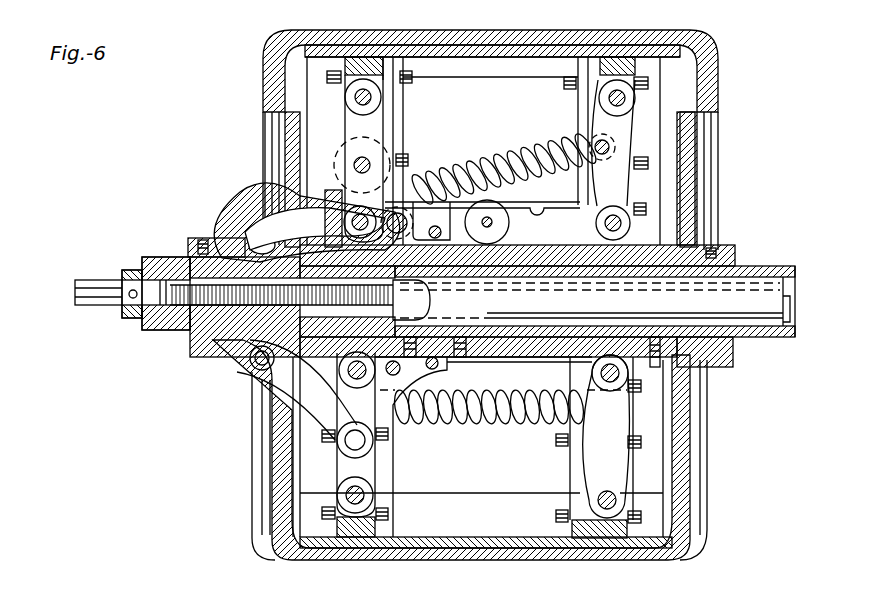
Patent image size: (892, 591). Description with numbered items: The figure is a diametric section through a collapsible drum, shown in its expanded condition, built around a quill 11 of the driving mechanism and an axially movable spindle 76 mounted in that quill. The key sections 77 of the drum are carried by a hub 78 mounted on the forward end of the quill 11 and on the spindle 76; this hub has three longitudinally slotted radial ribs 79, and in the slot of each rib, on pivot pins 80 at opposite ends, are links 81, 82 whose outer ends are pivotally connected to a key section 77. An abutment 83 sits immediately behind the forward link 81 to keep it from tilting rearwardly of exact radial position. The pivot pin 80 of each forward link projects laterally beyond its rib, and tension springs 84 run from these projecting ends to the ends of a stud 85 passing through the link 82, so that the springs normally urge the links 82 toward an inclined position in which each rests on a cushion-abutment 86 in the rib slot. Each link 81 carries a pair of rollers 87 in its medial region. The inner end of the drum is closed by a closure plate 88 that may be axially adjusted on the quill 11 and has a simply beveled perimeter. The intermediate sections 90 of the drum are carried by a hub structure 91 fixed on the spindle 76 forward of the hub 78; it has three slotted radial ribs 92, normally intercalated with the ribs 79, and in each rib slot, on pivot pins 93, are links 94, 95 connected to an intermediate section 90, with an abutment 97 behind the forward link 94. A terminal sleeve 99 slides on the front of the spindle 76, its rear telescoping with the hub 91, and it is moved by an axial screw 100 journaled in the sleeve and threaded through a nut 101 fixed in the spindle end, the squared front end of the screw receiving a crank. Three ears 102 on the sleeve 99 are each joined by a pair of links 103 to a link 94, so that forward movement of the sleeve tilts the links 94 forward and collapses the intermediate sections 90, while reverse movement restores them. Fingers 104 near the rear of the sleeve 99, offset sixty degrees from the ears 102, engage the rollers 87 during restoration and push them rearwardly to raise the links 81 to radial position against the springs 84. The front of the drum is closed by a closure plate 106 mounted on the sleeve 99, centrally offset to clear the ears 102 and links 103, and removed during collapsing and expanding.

The quill 11 is at (758, 266).
The spindle 76 is at (760, 308).
The key section 77 is at (500, 44).
The hub 78 is at (544, 343).
The radial rib 79 is at (640, 210).
The pivot pin 80 is at (350, 220).
The forward link 81 is at (350, 118).
The link 82 is at (623, 128).
The abutment 83 is at (400, 182).
The tension spring 84 is at (491, 175).
The stud 85 is at (595, 144).
The cushion-abutment 86 is at (493, 226).
The roller 87 is at (345, 160).
The closure plate 88 is at (683, 430).
The intermediate section 90 is at (336, 548).
The hub structure 91 is at (476, 344).
The radial rib 92 is at (499, 416).
The pivot pin 93 is at (352, 374).
The forward link 94 is at (345, 461).
The link 95 is at (607, 469).
The abutment 97 is at (385, 403).
The terminal sleeve 99 is at (168, 258).
The axial screw 100 is at (178, 313).
The nut 101 is at (203, 330).
The ear 102 is at (228, 352).
The link 103 is at (290, 232).
The finger 104 is at (290, 183).
The closure plate 106 is at (232, 220).